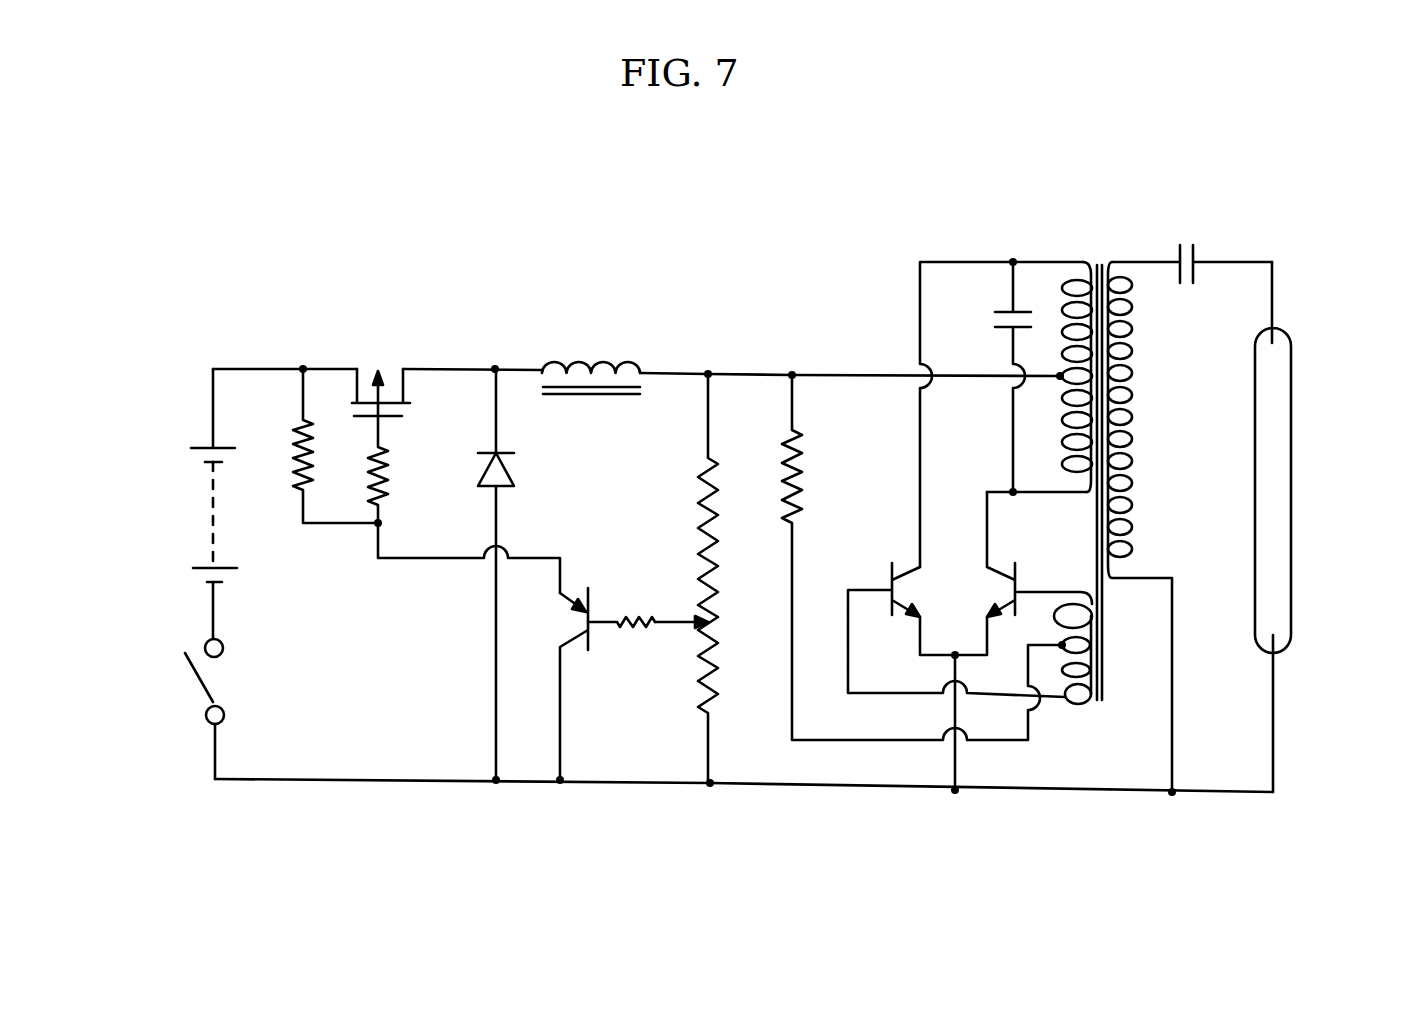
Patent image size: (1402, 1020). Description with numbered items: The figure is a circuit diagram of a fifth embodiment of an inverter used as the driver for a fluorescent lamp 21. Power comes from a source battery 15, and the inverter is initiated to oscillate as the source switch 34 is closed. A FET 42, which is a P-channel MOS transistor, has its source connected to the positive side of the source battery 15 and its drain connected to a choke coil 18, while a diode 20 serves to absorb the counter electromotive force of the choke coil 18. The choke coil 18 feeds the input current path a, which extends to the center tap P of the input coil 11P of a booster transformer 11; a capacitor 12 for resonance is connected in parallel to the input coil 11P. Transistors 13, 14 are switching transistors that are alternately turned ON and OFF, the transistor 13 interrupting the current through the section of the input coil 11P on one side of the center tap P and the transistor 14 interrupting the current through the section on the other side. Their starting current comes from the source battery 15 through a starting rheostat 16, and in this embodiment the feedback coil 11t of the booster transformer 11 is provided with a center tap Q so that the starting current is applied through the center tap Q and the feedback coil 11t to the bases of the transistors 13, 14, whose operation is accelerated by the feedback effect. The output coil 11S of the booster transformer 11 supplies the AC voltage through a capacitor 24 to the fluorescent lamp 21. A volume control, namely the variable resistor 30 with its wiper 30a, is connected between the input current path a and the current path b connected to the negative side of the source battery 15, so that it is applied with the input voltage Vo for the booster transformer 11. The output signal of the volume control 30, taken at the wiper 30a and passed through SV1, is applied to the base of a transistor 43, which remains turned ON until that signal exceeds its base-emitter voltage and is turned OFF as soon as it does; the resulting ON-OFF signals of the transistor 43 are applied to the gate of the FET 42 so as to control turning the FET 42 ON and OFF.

The source battery 15 is at (208, 537).
The source switch 34 is at (205, 692).
The FET 42 is at (362, 358).
The transistor 43 is at (568, 632).
The diode 20 is at (508, 470).
The choke coil 18 is at (576, 360).
The volume control 30 is at (698, 531).
The wiper of variable resistor 30a is at (668, 625).
The resistor SV1 is at (627, 599).
The starting rheostat 16 is at (805, 468).
The capacitor 12 is at (992, 320).
The transistor 13 is at (917, 573).
The transistor 14 is at (995, 573).
The booster transformer 11 is at (1100, 265).
The input coil 11P is at (1060, 312).
The output coil 11S is at (1133, 352).
The feedback coil 11t is at (1083, 703).
The capacitor 24 is at (1187, 245).
The fluorescent lamp 21 is at (1273, 465).
The input current path a is at (709, 374).
The current path b is at (712, 790).
The input voltage Vo is at (758, 353).
The center tap P is at (1060, 377).
The center tap Q is at (1090, 603).